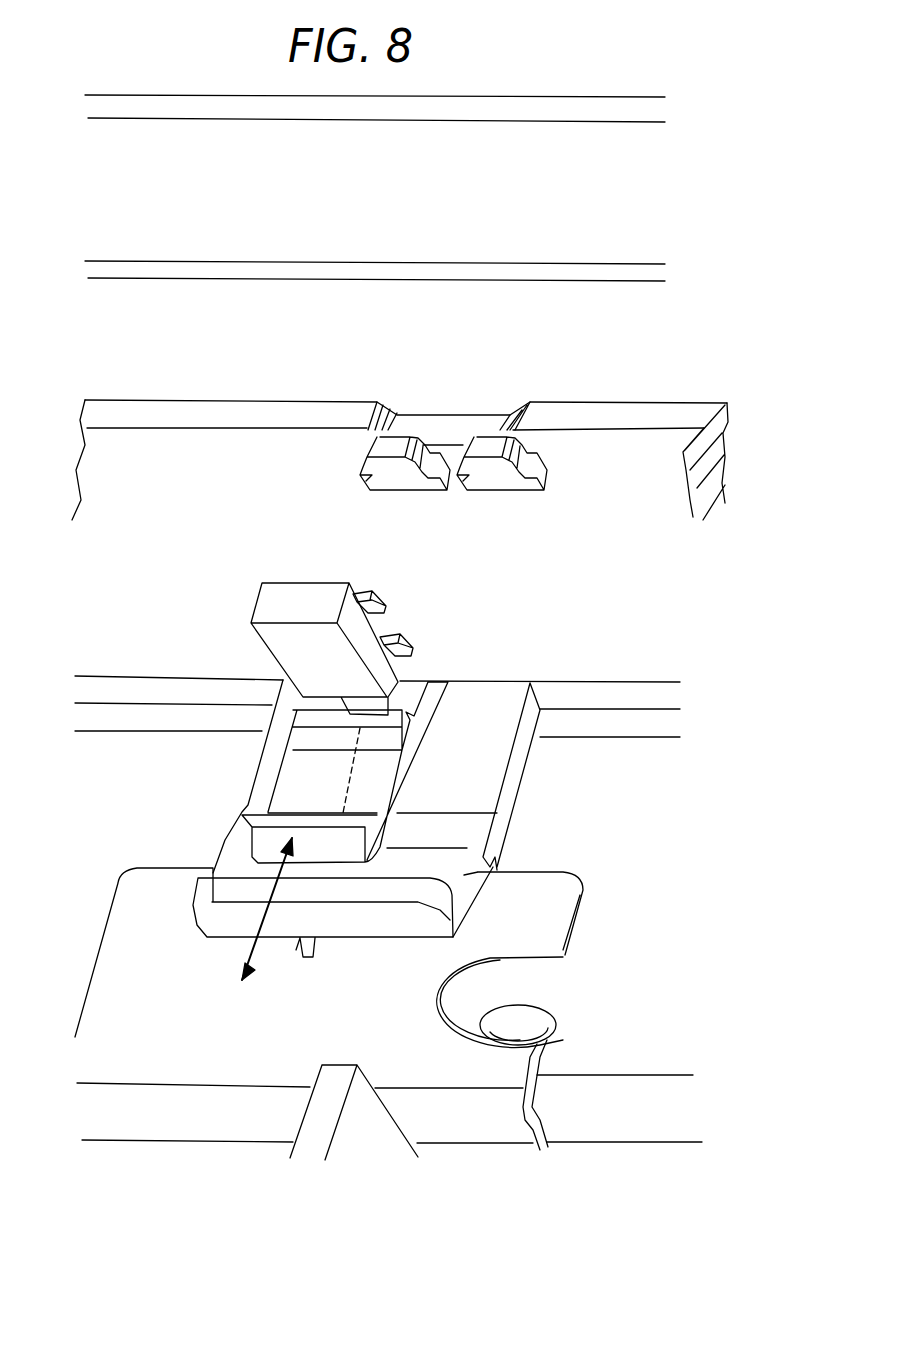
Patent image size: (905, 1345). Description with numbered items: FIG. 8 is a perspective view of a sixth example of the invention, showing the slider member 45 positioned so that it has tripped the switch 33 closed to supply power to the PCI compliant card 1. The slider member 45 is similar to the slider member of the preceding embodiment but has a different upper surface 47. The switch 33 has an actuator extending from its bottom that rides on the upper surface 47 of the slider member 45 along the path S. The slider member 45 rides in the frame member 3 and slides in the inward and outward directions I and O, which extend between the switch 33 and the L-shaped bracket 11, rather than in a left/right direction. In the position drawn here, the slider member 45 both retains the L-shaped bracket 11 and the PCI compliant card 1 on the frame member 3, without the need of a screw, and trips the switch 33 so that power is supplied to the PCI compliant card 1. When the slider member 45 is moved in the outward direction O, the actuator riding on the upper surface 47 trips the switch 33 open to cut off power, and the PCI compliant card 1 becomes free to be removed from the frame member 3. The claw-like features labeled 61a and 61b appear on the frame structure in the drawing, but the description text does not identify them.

The PCI compliant card 1 is at (298, 1162).
The frame member 3 is at (736, 913).
The L-shaped bracket 11 is at (108, 991).
The switch 33 is at (305, 592).
The slider member 45 is at (538, 802).
The upper surface 47 is at (375, 770).
The first engaging claw 61a is at (397, 440).
The second engaging claw 61b is at (487, 440).
The path S is at (348, 787).
The inward direction I is at (283, 847).
The outward direction O is at (250, 972).